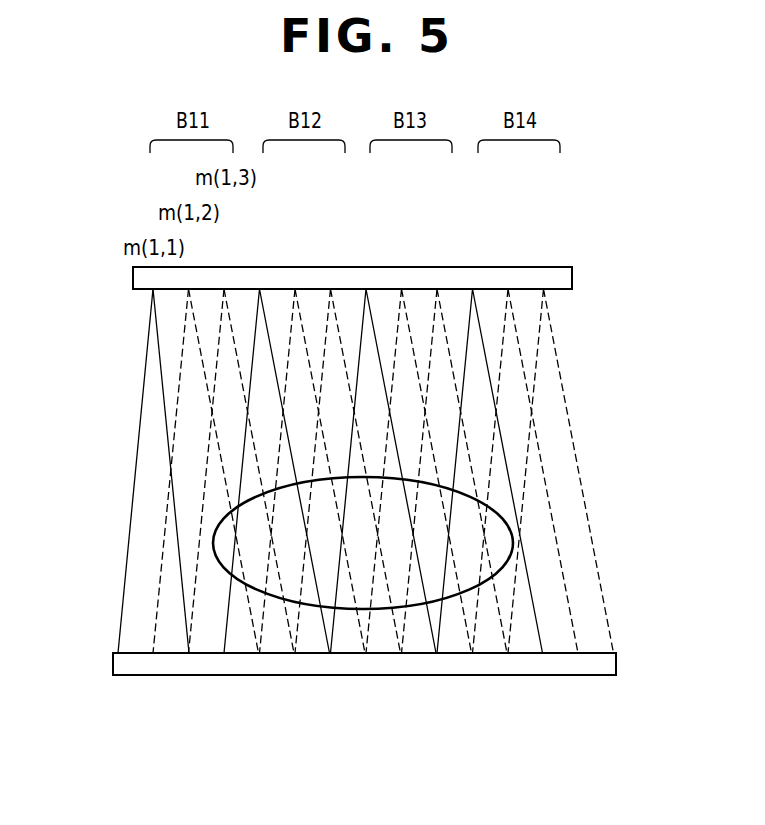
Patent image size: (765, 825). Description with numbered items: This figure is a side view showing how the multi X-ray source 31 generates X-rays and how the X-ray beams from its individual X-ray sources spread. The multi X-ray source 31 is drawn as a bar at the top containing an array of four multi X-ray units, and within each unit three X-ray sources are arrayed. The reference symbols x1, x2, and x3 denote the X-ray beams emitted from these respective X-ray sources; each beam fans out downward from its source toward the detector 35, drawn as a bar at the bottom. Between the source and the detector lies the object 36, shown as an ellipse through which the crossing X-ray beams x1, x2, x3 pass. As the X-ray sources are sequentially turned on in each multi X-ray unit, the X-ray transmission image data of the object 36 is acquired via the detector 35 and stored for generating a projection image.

The multi X-ray source 31 is at (572, 272).
The detector 35 is at (616, 660).
The object 36 is at (497, 534).
The X-ray beam x1 is at (118, 592).
The X-ray beam x2 is at (157, 562).
The X-ray beam x3 is at (207, 488).